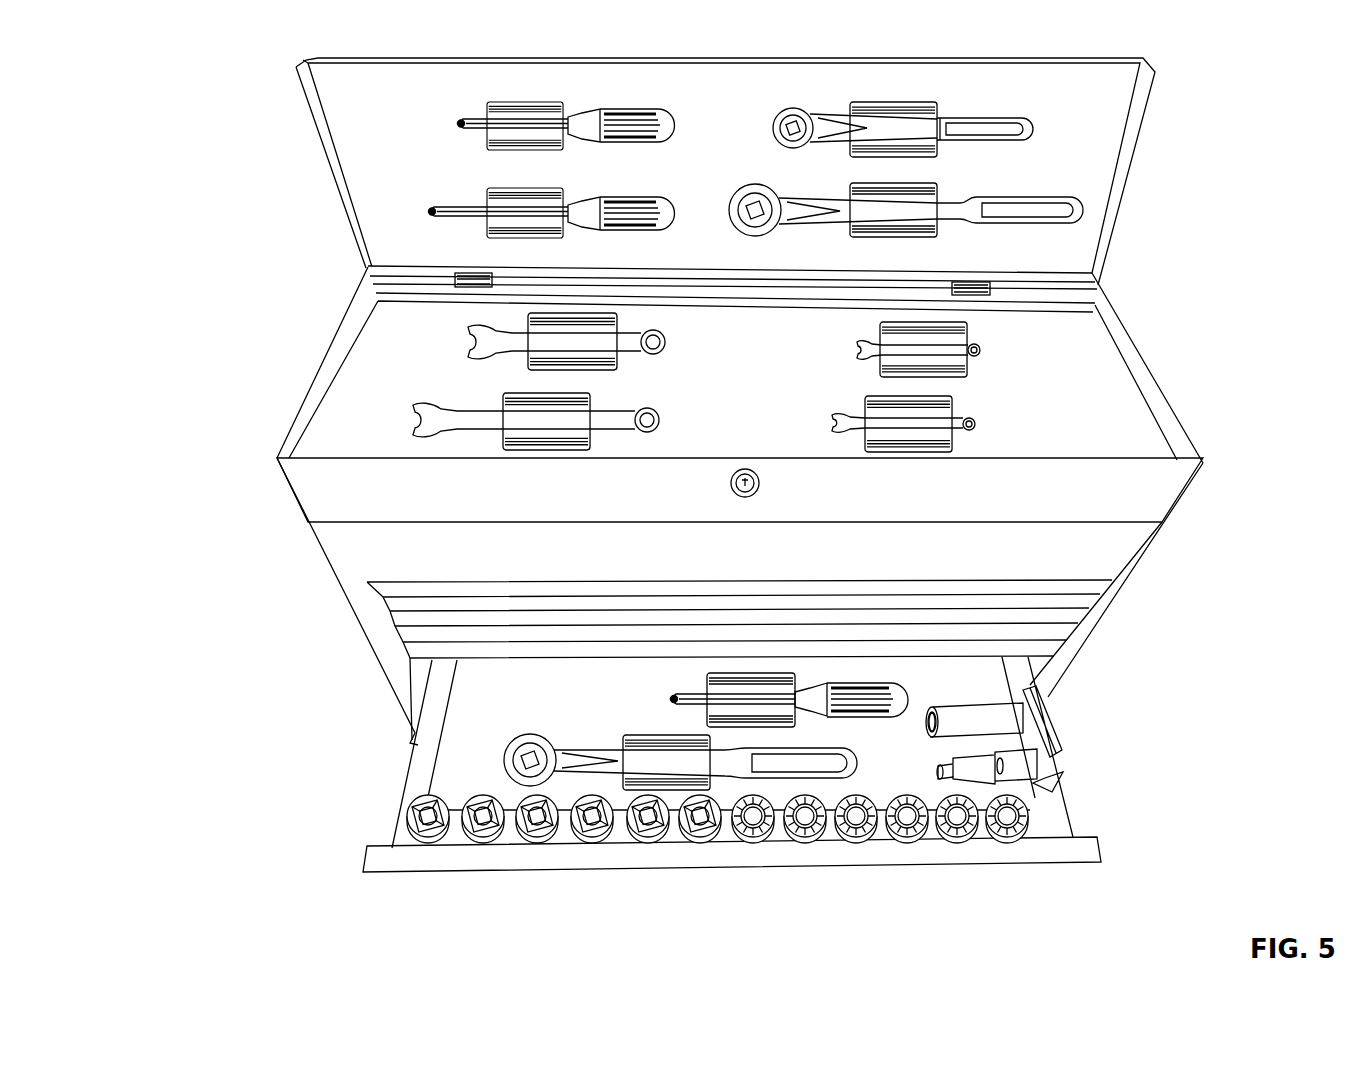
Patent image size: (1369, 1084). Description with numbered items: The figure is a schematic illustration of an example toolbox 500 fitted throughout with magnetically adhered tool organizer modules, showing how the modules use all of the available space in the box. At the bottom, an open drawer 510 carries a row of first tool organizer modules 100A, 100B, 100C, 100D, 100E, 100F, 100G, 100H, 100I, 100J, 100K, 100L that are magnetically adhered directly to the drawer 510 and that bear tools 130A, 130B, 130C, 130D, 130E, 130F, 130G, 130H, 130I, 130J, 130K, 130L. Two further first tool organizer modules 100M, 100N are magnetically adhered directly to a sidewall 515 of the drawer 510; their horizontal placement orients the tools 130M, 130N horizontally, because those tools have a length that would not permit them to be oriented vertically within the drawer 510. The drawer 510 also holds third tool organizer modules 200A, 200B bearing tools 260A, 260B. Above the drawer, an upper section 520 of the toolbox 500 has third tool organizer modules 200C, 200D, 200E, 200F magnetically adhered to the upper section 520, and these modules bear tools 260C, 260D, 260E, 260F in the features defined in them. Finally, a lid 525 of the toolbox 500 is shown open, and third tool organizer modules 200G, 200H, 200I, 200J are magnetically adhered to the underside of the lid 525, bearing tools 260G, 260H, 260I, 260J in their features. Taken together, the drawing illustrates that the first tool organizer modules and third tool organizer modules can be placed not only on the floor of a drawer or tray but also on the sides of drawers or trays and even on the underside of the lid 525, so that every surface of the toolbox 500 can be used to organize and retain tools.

The toolbox 500 is at (672, 458).
The lid 525 is at (1063, 250).
The upper section 520 is at (1145, 442).
The sidewall 515 is at (1047, 802).
The drawer 510 is at (1097, 842).
The first tool organizer module 100A is at (425, 843).
The first tool organizer module 100B is at (483, 843).
The first tool organizer module 100C is at (537, 843).
The first tool organizer module 100D is at (592, 843).
The first tool organizer module 100E is at (648, 843).
The first tool organizer module 100F is at (700, 843).
The first tool organizer module 100G is at (753, 843).
The first tool organizer module 100H is at (805, 843).
The first tool organizer module 100I is at (856, 843).
The first tool organizer module 100J is at (907, 843).
The first tool organizer module 100K is at (957, 843).
The first tool organizer module 100L is at (1010, 846).
The first tool organizer module 100M is at (1000, 790).
The first tool organizer module 100N is at (1028, 716).
The tool 130A is at (372, 848).
The tool 130B is at (478, 803).
The tool 130C is at (537, 845).
The tool 130D is at (592, 845).
The tool 130E is at (648, 845).
The tool 130F is at (700, 845).
The tool 130G is at (753, 845).
The tool 130H is at (805, 845).
The tool 130I is at (856, 845).
The tool 130J is at (907, 845).
The tool 130K is at (957, 845).
The tool 130L is at (1010, 848).
The tool 130M is at (1030, 752).
The tool 130N is at (990, 718).
The third tool organizer module 200A is at (630, 740).
The third tool organizer module 200B is at (723, 688).
The third tool organizer module 200C is at (946, 363).
The third tool organizer module 200D is at (940, 438).
The third tool organizer module 200E is at (540, 355).
The third tool organizer module 200F is at (513, 433).
The third tool organizer module 200G is at (500, 134).
The third tool organizer module 200H is at (497, 222).
The third tool organizer module 200I is at (920, 147).
The third tool organizer module 200J is at (920, 232).
The tool 260A is at (520, 757).
The tool 260B is at (912, 700).
The tool 260C is at (927, 350).
The tool 260D is at (910, 423).
The tool 260E is at (560, 340).
The tool 260F is at (503, 417).
The tool 260G is at (455, 118).
The tool 260H is at (432, 210).
The tool 260I is at (983, 127).
The tool 260J is at (1030, 210).